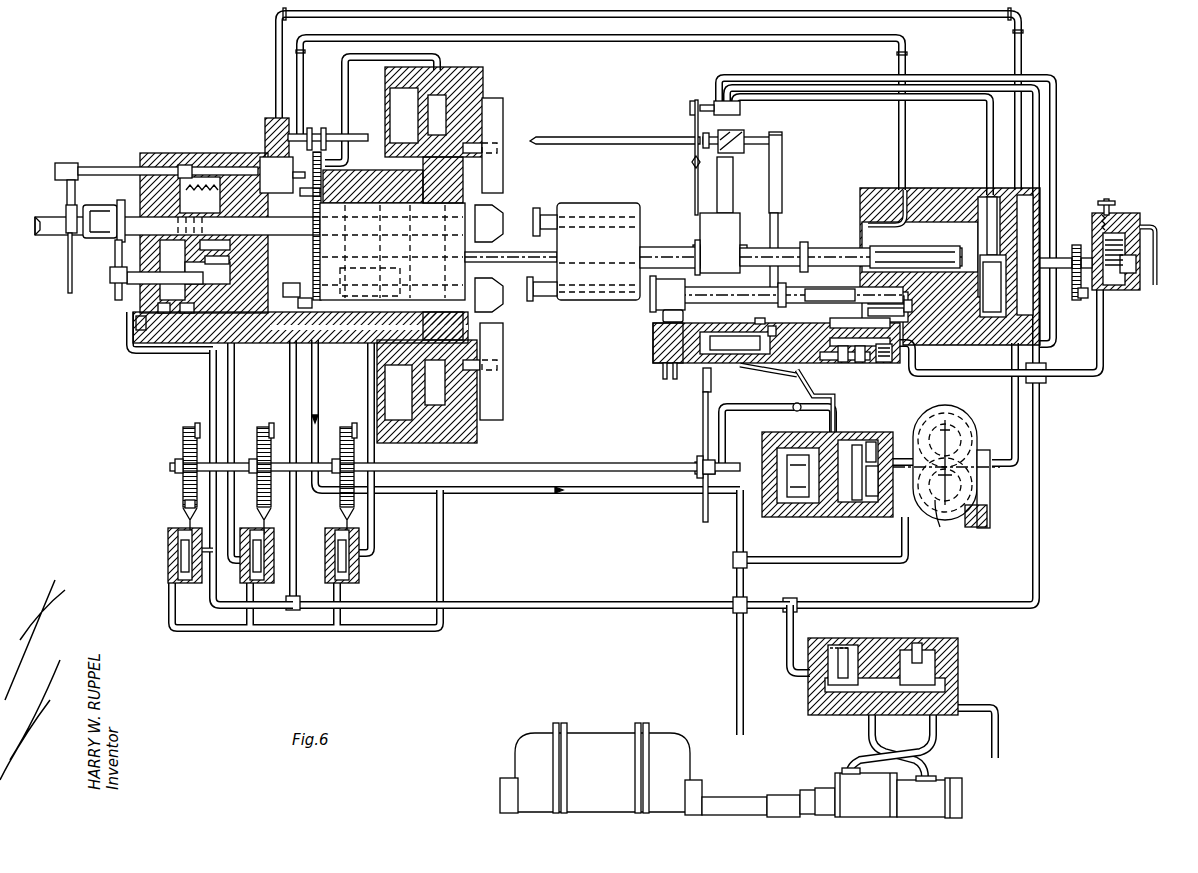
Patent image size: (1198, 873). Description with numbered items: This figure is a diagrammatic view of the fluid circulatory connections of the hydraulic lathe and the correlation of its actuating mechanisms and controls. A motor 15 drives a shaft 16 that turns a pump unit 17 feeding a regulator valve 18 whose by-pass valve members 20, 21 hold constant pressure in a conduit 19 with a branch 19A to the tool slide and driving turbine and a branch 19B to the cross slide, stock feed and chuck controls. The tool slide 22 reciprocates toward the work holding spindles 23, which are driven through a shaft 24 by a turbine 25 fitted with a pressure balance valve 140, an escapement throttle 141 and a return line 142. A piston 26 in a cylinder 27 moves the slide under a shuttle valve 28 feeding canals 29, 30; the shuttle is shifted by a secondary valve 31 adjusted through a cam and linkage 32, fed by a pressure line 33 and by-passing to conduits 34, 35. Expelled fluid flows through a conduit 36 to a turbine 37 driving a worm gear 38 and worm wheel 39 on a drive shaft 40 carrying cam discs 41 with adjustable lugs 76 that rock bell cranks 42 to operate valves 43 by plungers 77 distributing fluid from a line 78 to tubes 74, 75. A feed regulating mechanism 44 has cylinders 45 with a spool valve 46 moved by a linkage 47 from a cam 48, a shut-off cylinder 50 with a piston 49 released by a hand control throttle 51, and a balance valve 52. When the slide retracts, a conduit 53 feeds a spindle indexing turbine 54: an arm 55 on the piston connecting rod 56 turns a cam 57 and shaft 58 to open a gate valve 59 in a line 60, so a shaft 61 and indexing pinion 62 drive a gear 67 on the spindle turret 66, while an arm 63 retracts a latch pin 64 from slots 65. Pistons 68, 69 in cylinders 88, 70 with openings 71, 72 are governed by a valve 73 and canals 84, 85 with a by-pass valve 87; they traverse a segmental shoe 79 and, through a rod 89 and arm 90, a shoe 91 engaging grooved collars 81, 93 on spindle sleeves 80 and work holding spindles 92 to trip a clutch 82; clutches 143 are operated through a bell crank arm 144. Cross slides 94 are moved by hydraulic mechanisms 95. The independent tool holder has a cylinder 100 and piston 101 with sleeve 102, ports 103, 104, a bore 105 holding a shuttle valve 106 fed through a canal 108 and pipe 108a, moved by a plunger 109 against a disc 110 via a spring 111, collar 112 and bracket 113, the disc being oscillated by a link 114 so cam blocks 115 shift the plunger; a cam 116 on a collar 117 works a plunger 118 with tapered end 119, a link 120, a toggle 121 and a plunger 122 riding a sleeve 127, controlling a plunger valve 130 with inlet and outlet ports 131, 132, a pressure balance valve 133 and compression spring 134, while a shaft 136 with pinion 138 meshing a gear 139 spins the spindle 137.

The motor 15 is at (598, 750).
The shaft 16 is at (730, 812).
The pump unit 17 is at (940, 800).
The regulator valve 18 is at (958, 663).
The conduit 19 is at (786, 646).
The branch conduit 19A is at (1040, 326).
The branch conduit 19B is at (290, 360).
The by-pass valve member 20 is at (852, 662).
The by-pass valve member 21 is at (945, 642).
The tool slide 22 is at (600, 212).
The work holding spindles 23 is at (492, 210).
The shaft 24 is at (498, 252).
The turbine 25 is at (1136, 292).
The piston 26 is at (868, 236).
The cylinder 27 is at (920, 215).
The shuttle valve 28 is at (1000, 222).
The canal 29 is at (976, 322).
The canal 30 is at (884, 214).
The secondary valve 31 is at (714, 104).
The cam and linkage 32 is at (694, 166).
The pressure line 33 is at (1038, 130).
The conduit 34 is at (820, 98).
The conduit 35 is at (824, 80).
The conduit 36 is at (1036, 430).
The turbine 37 is at (958, 420).
The worm gear 38 is at (930, 420).
The worm wheel 39 is at (940, 530).
The drive shaft 40 is at (548, 468).
The cam discs 41 is at (182, 446).
The bell cranks 42 is at (185, 518).
The valves 43 is at (242, 530).
The feed regulating mechanism 44 is at (826, 506).
The cylinders 45 is at (846, 446).
The spool valve 46 is at (874, 448).
The linkage 47 is at (800, 390).
The cam 48 is at (702, 436).
The piston 49 is at (792, 506).
The pipe 50 is at (735, 582).
The hand control throttle 51 is at (790, 426).
The balance valve 52 is at (872, 504).
The conduit 53 is at (628, 32).
The spindle indexing turbine 54 is at (285, 160).
The arm 55 is at (733, 186).
The piston connecting rod 56 is at (657, 250).
The cam 57 is at (736, 138).
The shaft 58 is at (544, 138).
The gate valve 59 is at (268, 135).
The line 60 is at (275, 78).
The shaft 61 is at (293, 176).
The indexing pinion 62 is at (310, 198).
The arm 63 is at (323, 148).
The latch pin 64 is at (346, 156).
The slots 65 is at (325, 255).
The spindle turret 66 is at (468, 304).
The gear 67 is at (298, 304).
The piston 68 is at (184, 164).
The piston 69 is at (206, 252).
The cylinder 70 is at (200, 283).
The inlet opening 71 is at (186, 316).
The outlet opening 72 is at (138, 324).
The valve 73 is at (166, 316).
The tube 74 is at (234, 410).
The tube 75 is at (211, 393).
The adjustable lugs 76 is at (183, 504).
The plunger 77 is at (180, 556).
The line 78 is at (213, 606).
The segmental shoe 79 is at (115, 262).
The spindle sleeves 80 is at (292, 278).
The grooved collars 81 is at (118, 206).
The clutch 82 is at (100, 242).
The canal 84 is at (145, 183).
The canal 85 is at (218, 192).
The by-pass valve 87 is at (230, 260).
The cylinder 88 is at (202, 166).
The rod 89 is at (82, 168).
The arm 90 is at (66, 190).
The shoe 91 is at (67, 283).
The work holding spindles 92 is at (38, 226).
The grooved collars 93 is at (66, 228).
The cross slides 94 is at (497, 112).
The hydraulic mechanisms 95 is at (445, 98).
The cylinder 100 is at (875, 256).
The piston 101 is at (850, 252).
The sleeve 102 is at (744, 288).
The port 103 is at (900, 306).
The port 104 is at (826, 290).
The bore 105 is at (904, 318).
The shuttle valve 106 is at (910, 338).
The canal 108 is at (892, 352).
The pipe 108a is at (942, 372).
The plunger 109 is at (790, 335).
The disc 110 is at (775, 236).
The spring 111 is at (756, 320).
The collar 112 is at (770, 330).
The bracket 113 is at (802, 256).
The link 114 is at (782, 166).
The cam blocks 115 is at (781, 288).
The cam 116 is at (662, 318).
The collar 117 is at (668, 290).
The plunger 118 is at (655, 340).
The tapered end portion 119 is at (663, 362).
The link 120 is at (674, 366).
The toggle 121 is at (702, 380).
The plunger 122 is at (698, 365).
The sleeve 127 is at (735, 232).
The plunger valve 130 is at (860, 362).
The inlet port 131 is at (840, 360).
The outlet port 132 is at (828, 356).
The pressure balance valve 133 is at (832, 344).
The compression spring 134 is at (882, 362).
The shaft 136 is at (1090, 297).
The spindle 137 is at (547, 300).
The pinion 138 is at (1096, 310).
The gear 139 is at (1076, 244).
The pressure balance valve 140 is at (1138, 262).
The escapement throttle 141 is at (1110, 206).
The return line 142 is at (1156, 244).
The clutches 143 is at (392, 235).
The bell crank arm 144 is at (392, 285).